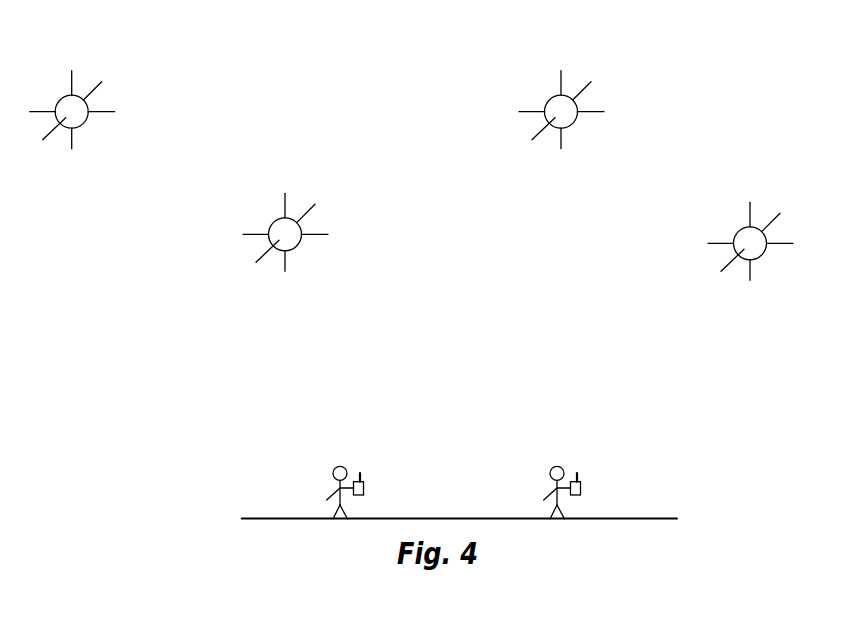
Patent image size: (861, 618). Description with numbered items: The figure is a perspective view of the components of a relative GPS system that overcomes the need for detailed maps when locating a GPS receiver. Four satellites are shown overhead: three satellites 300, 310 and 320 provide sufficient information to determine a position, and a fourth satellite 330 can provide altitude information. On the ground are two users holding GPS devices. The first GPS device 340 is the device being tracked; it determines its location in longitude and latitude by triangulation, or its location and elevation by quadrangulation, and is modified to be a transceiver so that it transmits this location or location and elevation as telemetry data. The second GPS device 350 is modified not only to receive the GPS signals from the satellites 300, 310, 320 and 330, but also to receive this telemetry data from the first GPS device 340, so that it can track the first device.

The satellite 300 is at (73, 83).
The satellite 310 is at (287, 206).
The satellite 320 is at (562, 82).
The fourth satellite 330 is at (752, 214).
The first GPS device 340 is at (364, 488).
The second GPS device 350 is at (582, 487).